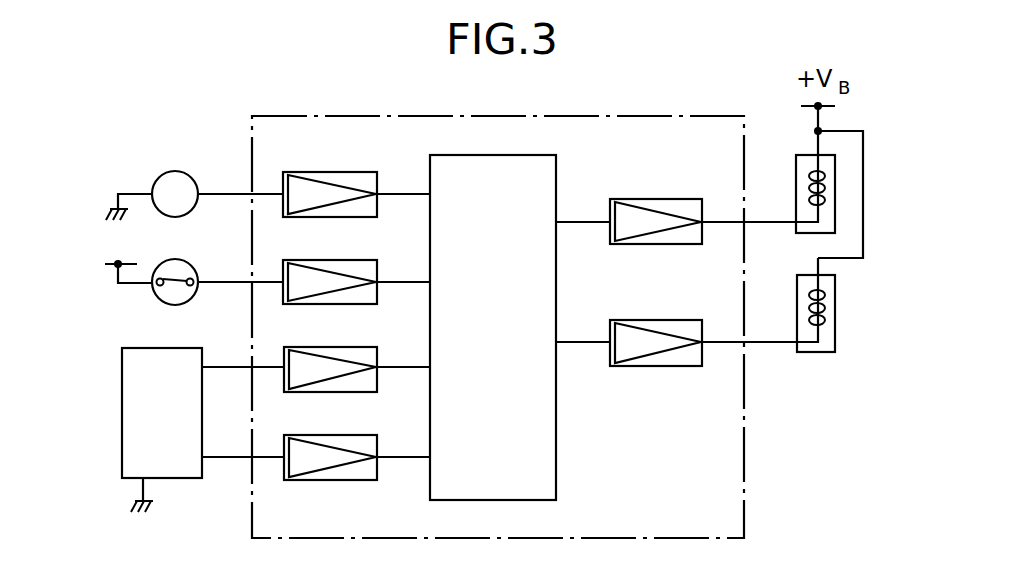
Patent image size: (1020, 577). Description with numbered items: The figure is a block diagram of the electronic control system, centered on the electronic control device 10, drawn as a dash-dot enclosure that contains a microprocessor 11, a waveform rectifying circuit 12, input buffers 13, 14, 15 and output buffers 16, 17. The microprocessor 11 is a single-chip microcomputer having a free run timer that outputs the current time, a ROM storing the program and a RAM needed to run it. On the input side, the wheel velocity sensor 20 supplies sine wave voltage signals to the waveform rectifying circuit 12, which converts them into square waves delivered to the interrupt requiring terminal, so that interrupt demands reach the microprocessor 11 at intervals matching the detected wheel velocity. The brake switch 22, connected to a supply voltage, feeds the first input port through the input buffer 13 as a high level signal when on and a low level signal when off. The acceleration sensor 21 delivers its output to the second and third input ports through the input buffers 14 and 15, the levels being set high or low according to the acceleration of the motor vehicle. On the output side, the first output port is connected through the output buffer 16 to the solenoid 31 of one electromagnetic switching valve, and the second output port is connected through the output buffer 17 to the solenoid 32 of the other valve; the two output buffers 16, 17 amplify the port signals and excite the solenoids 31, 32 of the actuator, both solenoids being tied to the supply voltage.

The electronic control device 10 is at (744, 458).
The microprocessor 11 is at (557, 423).
The waveform rectifying circuit 12 is at (338, 171).
The input buffer 13 is at (338, 259).
The input buffer 14 is at (338, 346).
The input buffer 15 is at (338, 434).
The output buffer 16 is at (655, 198).
The output buffer 17 is at (648, 319).
The wheel velocity sensor 20 is at (178, 172).
The acceleration sensor 21 is at (173, 478).
The brake switch 22 is at (178, 260).
The solenoid 31 is at (795, 195).
The solenoid 32 is at (795, 312).